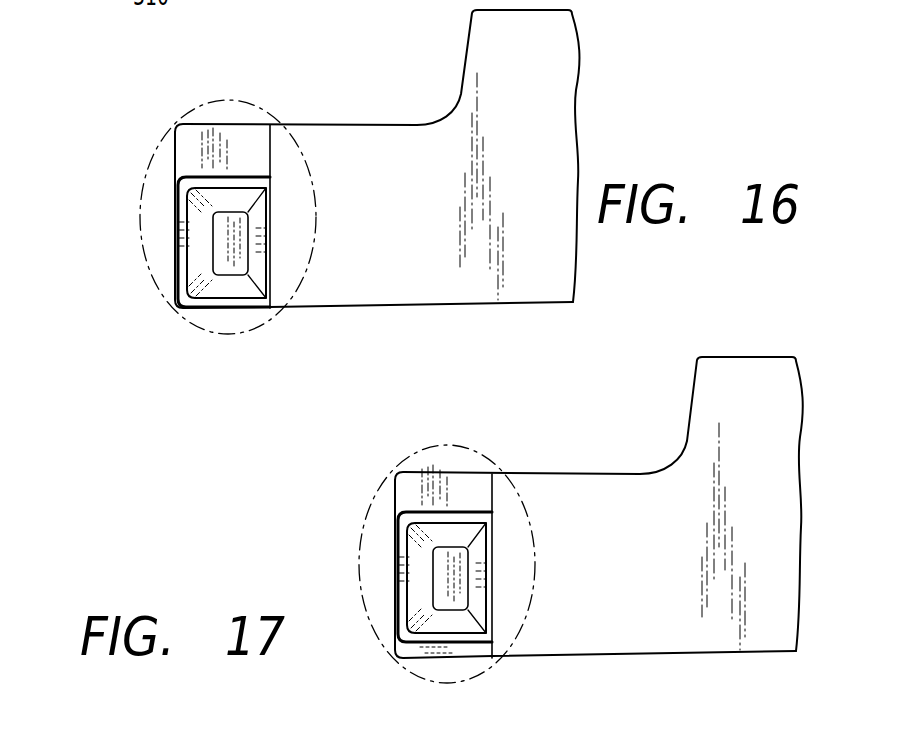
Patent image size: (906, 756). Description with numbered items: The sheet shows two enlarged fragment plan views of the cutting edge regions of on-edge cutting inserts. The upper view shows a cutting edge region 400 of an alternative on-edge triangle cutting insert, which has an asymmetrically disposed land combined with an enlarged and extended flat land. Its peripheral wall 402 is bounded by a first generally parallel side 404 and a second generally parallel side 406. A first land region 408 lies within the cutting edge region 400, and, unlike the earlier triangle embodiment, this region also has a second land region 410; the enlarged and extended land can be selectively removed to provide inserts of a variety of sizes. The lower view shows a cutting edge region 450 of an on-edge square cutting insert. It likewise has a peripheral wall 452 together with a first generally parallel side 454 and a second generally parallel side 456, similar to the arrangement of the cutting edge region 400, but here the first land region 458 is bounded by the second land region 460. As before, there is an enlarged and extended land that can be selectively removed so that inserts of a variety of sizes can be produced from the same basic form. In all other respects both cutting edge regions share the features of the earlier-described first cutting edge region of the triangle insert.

In FIG. 16, the cutting edge region 400 is at (139, 212).
In FIG. 16, the peripheral wall 402 is at (553, 125).
In FIG. 16, the first generally parallel side 404 is at (537, 305).
In FIG. 16, the second generally parallel side 406 is at (352, 125).
In FIG. 16, the first land region 408 is at (173, 273).
In FIG. 16, the second land region 410 is at (225, 128).
In FIG. 17, the cutting edge region 450 is at (399, 564).
In FIG. 17, the peripheral wall 452 is at (743, 504).
In FIG. 17, the first generally parallel side 454 is at (623, 577).
In FIG. 17, the second generally parallel side 456 is at (517, 458).
In FIG. 17, the first land region 458 is at (383, 574).
In FIG. 17, the second land region 460 is at (392, 580).